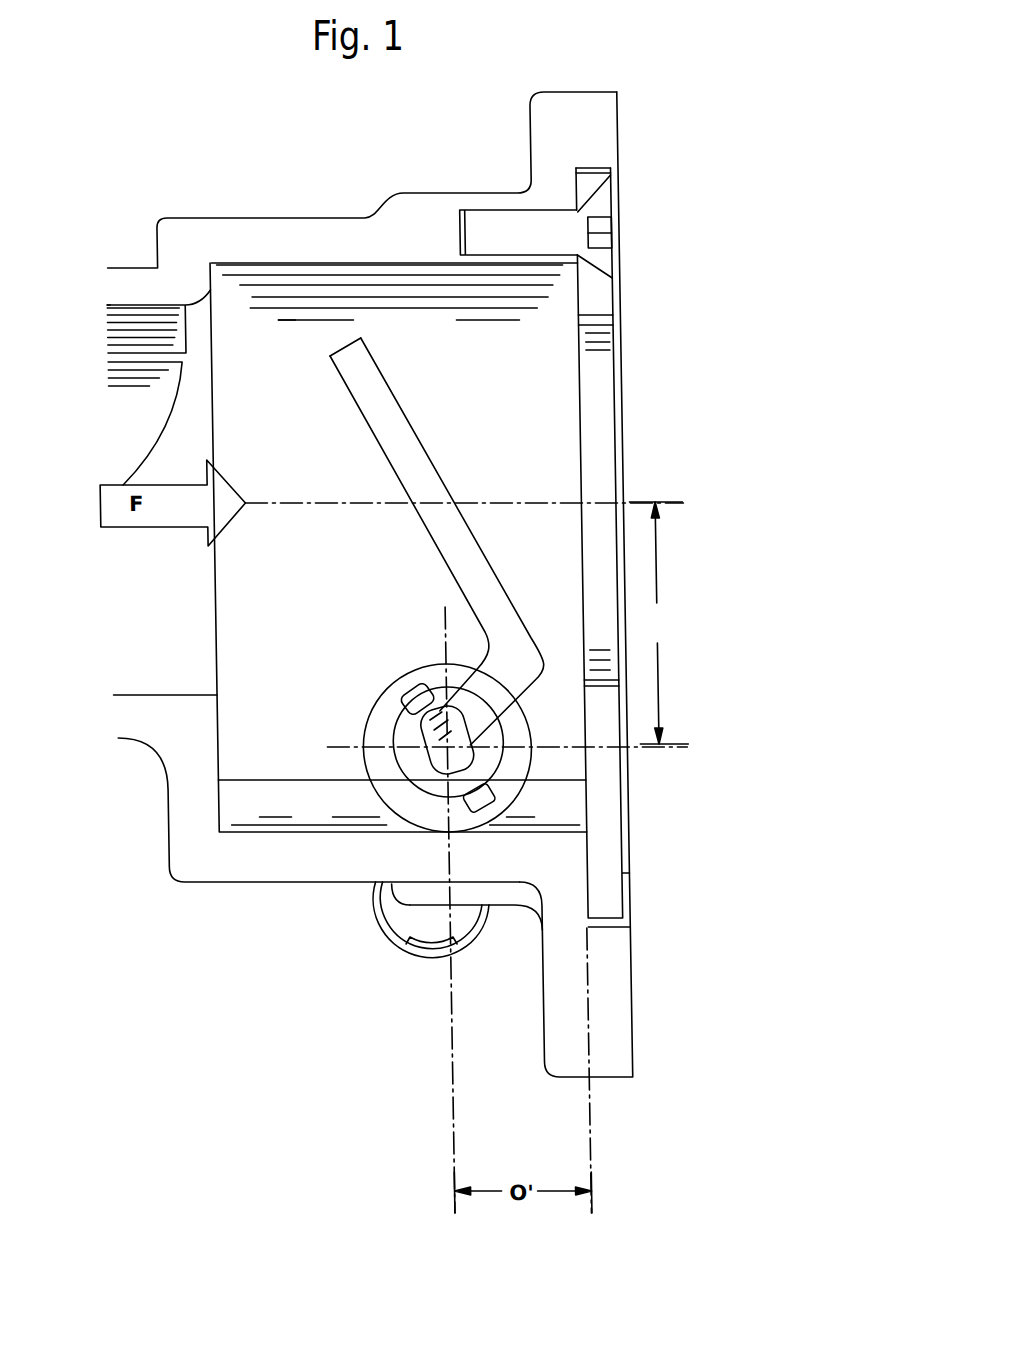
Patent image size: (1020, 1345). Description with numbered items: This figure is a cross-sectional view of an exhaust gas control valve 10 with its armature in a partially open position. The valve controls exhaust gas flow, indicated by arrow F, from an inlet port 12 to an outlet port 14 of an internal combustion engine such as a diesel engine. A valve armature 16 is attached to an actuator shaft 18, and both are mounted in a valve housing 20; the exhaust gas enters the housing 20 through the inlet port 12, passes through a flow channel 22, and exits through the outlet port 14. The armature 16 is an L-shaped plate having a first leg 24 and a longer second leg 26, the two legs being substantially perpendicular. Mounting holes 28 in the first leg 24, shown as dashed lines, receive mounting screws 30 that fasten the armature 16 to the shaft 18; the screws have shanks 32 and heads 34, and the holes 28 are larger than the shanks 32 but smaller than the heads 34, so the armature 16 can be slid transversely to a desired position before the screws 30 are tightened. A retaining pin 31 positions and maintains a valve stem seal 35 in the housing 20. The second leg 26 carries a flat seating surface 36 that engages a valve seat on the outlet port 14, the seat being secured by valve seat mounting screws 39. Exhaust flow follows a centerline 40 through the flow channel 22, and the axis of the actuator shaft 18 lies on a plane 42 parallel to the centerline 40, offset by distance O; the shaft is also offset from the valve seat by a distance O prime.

The exhaust gas control valve 10 is at (476, 138).
The inlet port 12 is at (141, 395).
The outlet port 14 is at (610, 403).
The valve armature 16 is at (356, 353).
The actuator shaft 18 is at (443, 760).
The valve housing 20 is at (247, 237).
The flow channel 22 is at (546, 320).
The first leg 24 is at (505, 721).
The second leg 26 is at (523, 525).
The mounting holes 28 is at (440, 750).
The mounting screws 30 is at (444, 687).
The retaining pin 31 is at (399, 687).
The shanks 32 is at (551, 651).
The heads 34 is at (549, 650).
The valve stem seal 35 is at (383, 719).
The seating surface 36 is at (381, 347).
The valve seat mounting screws 39 is at (569, 230).
The centerline 40 is at (667, 497).
The plane 42 is at (654, 750).